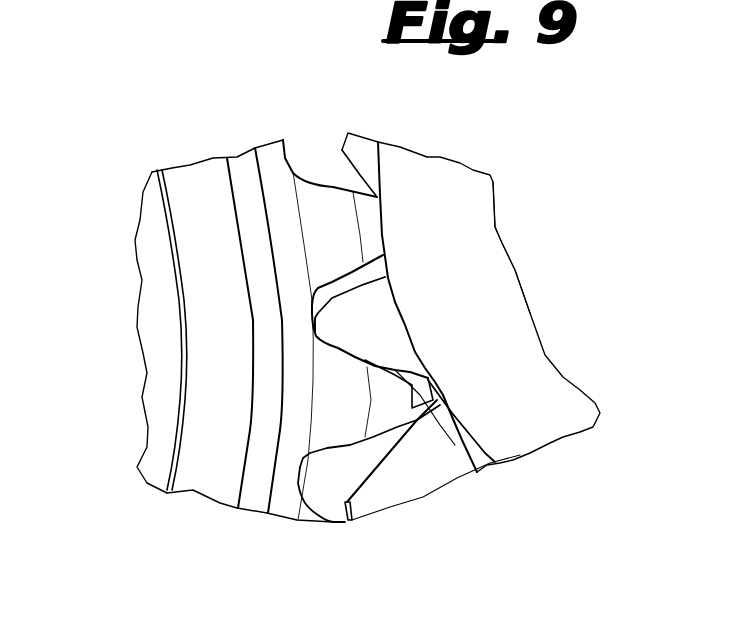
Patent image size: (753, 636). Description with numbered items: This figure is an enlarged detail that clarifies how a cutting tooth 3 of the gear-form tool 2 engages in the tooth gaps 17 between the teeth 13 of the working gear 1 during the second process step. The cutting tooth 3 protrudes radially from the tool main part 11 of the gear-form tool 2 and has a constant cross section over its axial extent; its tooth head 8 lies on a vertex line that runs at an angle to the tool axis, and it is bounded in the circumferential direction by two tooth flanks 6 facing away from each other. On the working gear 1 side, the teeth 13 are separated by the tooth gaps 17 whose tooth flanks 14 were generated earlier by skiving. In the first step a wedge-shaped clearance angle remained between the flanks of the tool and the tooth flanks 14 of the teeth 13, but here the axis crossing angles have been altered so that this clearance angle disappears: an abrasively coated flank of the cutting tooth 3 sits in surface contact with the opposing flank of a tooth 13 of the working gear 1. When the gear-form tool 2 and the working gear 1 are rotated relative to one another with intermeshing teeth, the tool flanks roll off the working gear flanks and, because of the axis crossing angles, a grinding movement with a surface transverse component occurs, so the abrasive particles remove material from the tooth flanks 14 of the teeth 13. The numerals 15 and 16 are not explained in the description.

The working gear 1 is at (173, 205).
The gear-form tool 2 is at (457, 202).
The cutting tooth 3 is at (387, 343).
The tooth flank 6 is at (386, 277).
The tooth head 8 is at (318, 330).
The tool main part 11 is at (470, 285).
The tooth 13 is at (395, 405).
The tooth flank 14 is at (350, 268).
The rounded edge 15 is at (312, 313).
The slot 16 is at (443, 408).
The tooth gap 17 is at (327, 482).